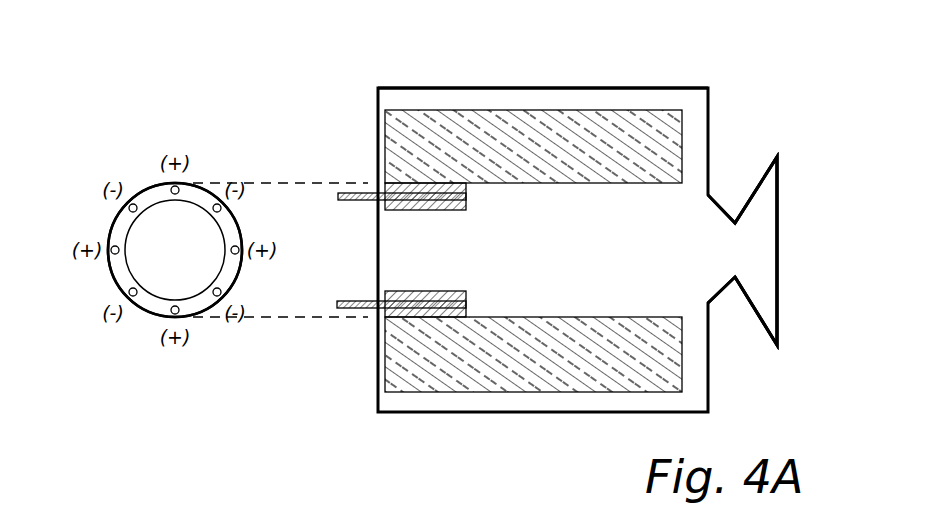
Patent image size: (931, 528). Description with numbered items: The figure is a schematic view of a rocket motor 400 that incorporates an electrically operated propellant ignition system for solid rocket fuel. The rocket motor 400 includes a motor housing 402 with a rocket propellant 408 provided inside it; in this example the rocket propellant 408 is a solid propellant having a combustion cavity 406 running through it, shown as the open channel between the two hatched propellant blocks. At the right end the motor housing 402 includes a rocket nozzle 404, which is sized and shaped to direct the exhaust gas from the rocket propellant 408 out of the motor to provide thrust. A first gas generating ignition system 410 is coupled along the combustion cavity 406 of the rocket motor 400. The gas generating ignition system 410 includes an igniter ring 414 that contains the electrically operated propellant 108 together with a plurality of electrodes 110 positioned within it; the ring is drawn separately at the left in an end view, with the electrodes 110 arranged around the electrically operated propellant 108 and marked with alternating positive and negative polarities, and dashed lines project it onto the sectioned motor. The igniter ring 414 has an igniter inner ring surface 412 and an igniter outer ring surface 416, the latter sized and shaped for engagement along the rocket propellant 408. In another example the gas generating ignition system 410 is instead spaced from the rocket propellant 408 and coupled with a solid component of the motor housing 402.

The rocket motor 400 is at (430, 412).
The motor housing 402 is at (513, 87).
The rocket nozzle 404 is at (778, 207).
The combustion cavity 406 is at (648, 213).
The rocket propellant 408 is at (533, 373).
The gas generating ignition system 410 is at (445, 186).
The igniter inner ring surface 412 is at (133, 272).
The igniter ring 414 is at (437, 318).
The igniter outer ring surface 416 is at (203, 315).
The electrically operated propellant 108 is at (438, 211).
The electrodes 110 is at (355, 201).